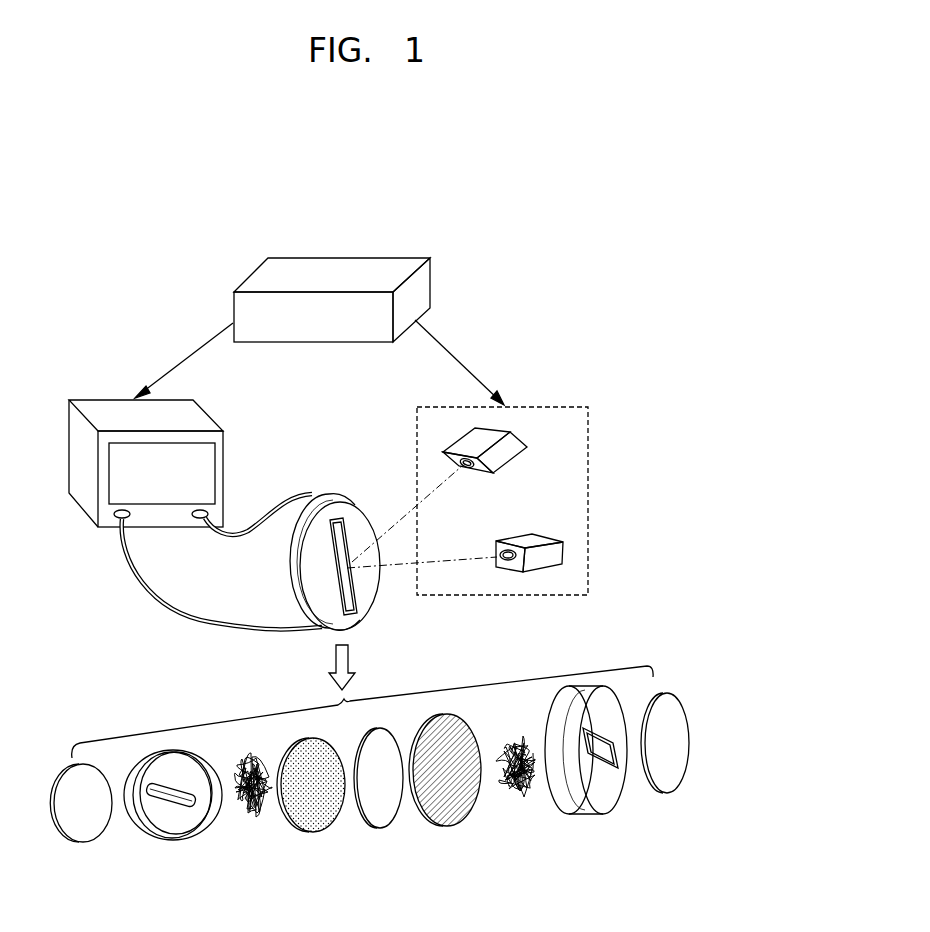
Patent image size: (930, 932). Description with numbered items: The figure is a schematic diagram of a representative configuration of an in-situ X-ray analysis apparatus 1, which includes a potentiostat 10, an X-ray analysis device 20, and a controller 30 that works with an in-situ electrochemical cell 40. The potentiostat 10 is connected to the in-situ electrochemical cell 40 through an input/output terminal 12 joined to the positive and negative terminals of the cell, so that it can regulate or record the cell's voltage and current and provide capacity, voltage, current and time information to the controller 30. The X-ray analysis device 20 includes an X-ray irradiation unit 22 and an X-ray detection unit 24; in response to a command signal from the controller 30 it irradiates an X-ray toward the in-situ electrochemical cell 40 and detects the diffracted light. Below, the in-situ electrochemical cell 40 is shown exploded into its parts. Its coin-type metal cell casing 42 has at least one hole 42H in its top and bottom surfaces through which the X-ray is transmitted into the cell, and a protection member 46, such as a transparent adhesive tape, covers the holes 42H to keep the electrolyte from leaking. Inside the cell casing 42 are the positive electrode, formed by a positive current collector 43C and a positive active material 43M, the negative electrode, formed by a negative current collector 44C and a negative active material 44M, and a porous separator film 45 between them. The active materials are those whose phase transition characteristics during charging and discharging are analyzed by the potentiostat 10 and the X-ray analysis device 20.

The in-situ X-ray analysis apparatus 1 is at (503, 241).
The potentiostat 10 is at (100, 411).
The input/output terminal 12 is at (133, 590).
The X-ray analysis device 20 is at (573, 407).
The X-ray irradiation unit 22 is at (536, 540).
The X-ray detection unit 24 is at (515, 446).
The controller 30 is at (349, 270).
The in-situ electrochemical cell 40 is at (358, 527).
The cell casing 42 is at (157, 835).
The hole 42H is at (186, 808).
The positive current collector 43C is at (258, 827).
The positive active material 43M is at (321, 822).
The negative current collector 44C is at (525, 800).
The negative active material 44M is at (460, 820).
The separator film 45 is at (388, 818).
The protection member 46 is at (83, 833).